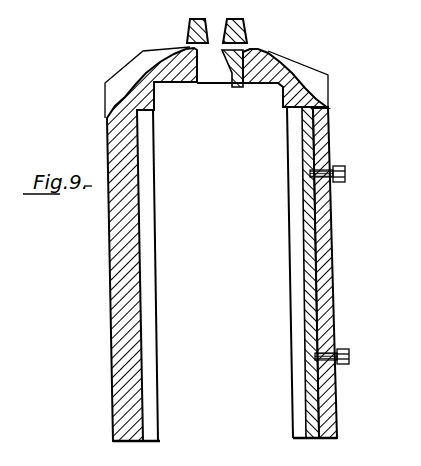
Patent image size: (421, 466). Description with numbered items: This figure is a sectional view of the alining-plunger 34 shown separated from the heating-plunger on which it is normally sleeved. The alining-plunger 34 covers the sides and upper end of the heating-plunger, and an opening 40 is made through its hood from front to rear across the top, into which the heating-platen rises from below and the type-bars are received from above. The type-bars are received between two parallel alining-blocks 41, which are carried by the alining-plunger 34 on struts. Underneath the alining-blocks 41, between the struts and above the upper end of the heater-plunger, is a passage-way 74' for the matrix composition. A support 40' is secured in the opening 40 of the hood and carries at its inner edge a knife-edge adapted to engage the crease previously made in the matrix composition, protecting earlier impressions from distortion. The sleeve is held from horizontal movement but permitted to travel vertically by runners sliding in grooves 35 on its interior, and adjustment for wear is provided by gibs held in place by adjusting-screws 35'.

The opening 40 is at (174, 228).
The support 40' is at (291, 63).
The alining-blocks 41 is at (205, 23).
The passage-way 74' is at (269, 56).
The alining-plunger 34 is at (338, 280).
The grooves 35 is at (225, 274).
The adjusting-screws 35' is at (356, 257).